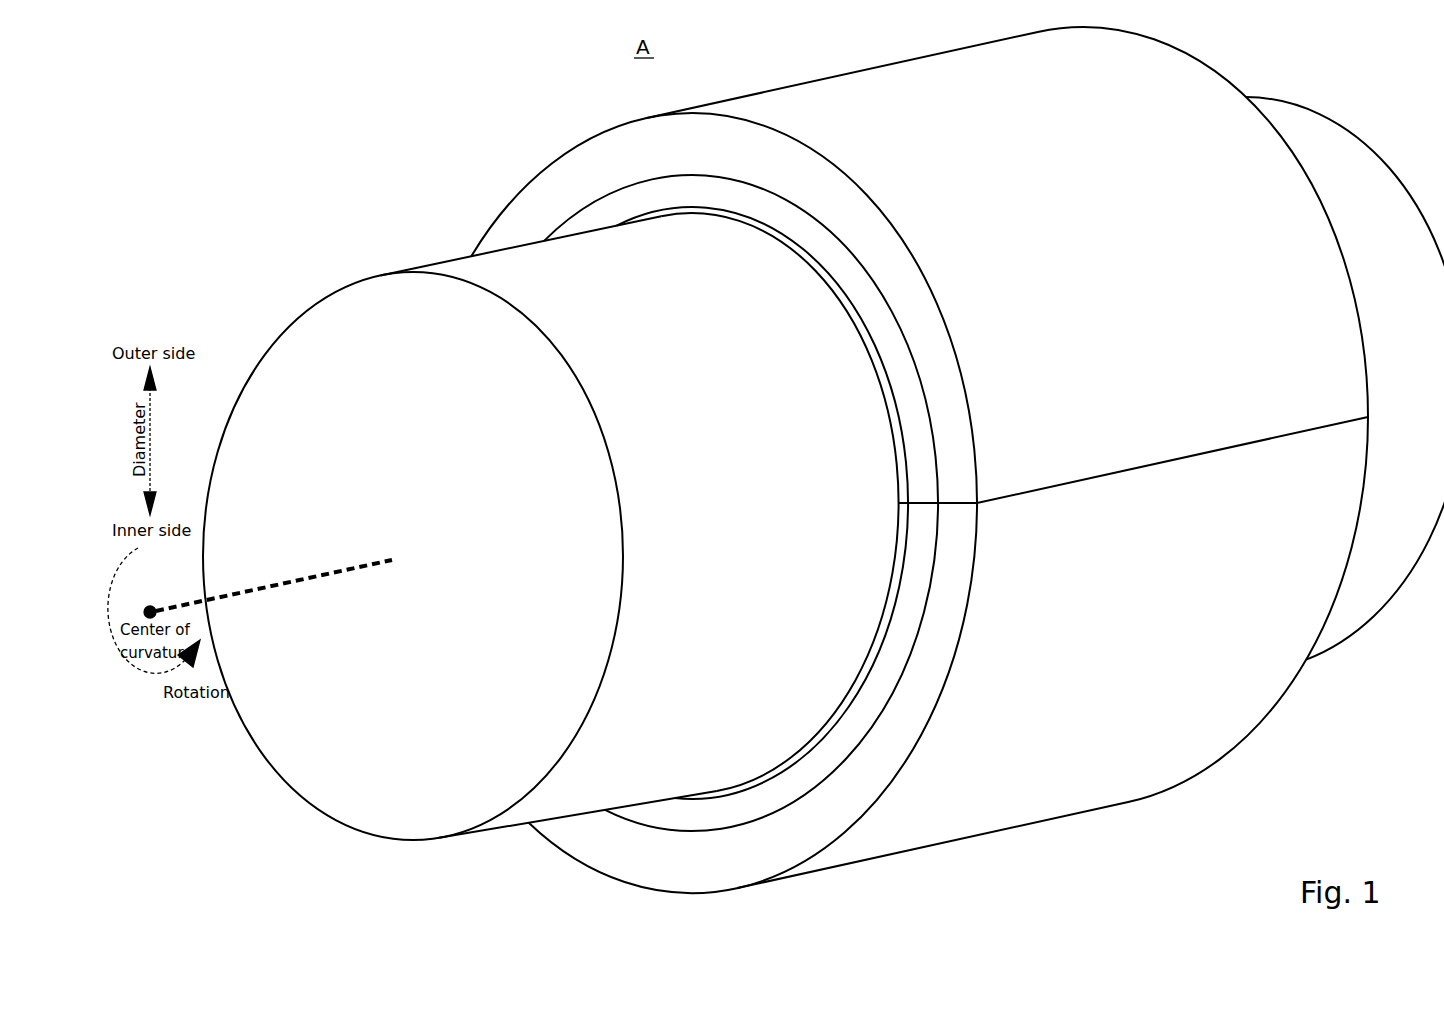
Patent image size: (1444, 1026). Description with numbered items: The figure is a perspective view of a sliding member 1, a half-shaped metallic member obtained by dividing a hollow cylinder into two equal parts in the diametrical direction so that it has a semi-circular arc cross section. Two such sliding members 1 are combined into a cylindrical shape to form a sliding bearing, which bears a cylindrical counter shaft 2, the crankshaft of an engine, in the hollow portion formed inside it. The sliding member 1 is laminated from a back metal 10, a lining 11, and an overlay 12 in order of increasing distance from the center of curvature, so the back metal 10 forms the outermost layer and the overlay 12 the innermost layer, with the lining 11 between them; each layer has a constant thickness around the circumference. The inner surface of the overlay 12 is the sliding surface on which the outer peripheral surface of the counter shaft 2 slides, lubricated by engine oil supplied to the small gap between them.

The sliding member 1 is at (957, 468).
The counter shaft 2 is at (325, 298).
The back metal 10 is at (687, 128).
The lining 11 is at (658, 187).
The overlay 12 is at (643, 213).